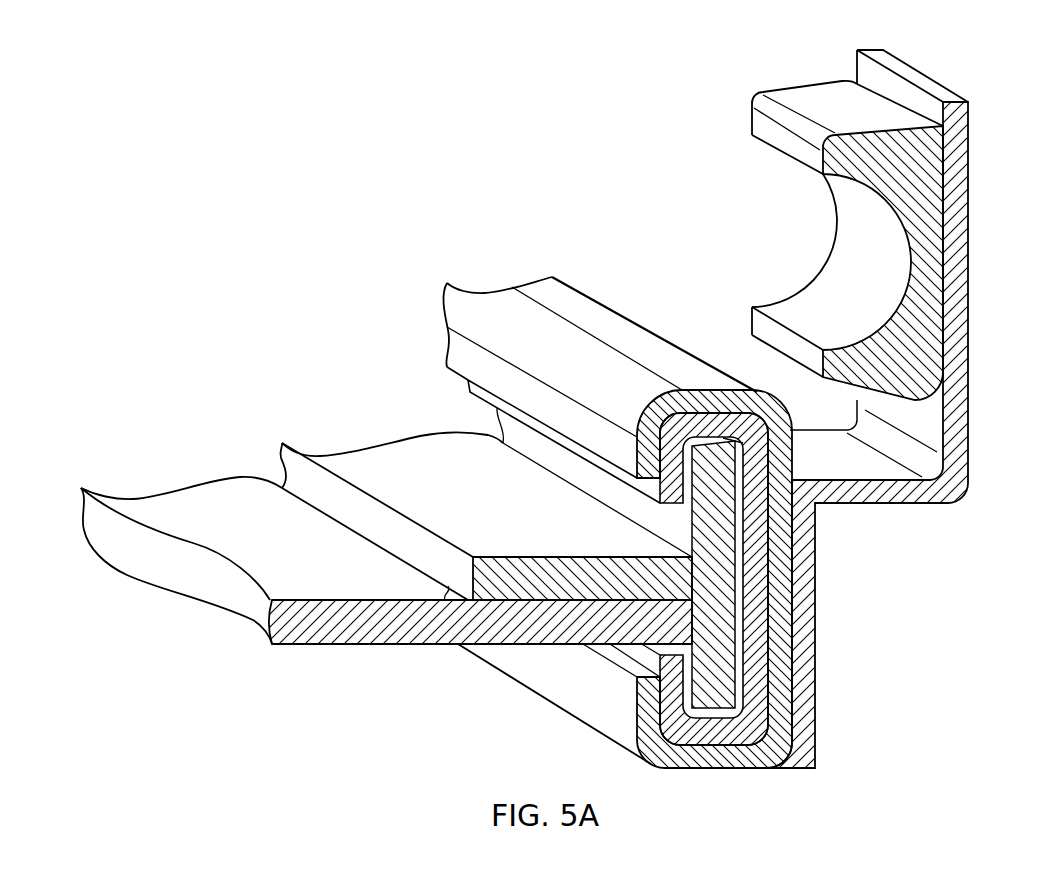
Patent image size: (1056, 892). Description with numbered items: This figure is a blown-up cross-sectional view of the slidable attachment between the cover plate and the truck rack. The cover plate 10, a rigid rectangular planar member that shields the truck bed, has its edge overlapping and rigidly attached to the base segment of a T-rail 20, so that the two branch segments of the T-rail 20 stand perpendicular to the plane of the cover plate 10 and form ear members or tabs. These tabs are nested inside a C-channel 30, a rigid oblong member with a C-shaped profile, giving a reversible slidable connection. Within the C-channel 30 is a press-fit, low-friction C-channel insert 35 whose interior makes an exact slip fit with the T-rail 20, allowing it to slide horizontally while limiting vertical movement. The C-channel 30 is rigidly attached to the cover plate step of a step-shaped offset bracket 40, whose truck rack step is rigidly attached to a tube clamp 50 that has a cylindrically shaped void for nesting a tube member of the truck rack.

The cover plate 10 is at (388, 642).
The T-rail 20 is at (533, 562).
The C-channel 30 is at (787, 588).
The C-channel insert 35 is at (758, 643).
The offset bracket 40 is at (962, 262).
The tube clamp 50 is at (893, 318).